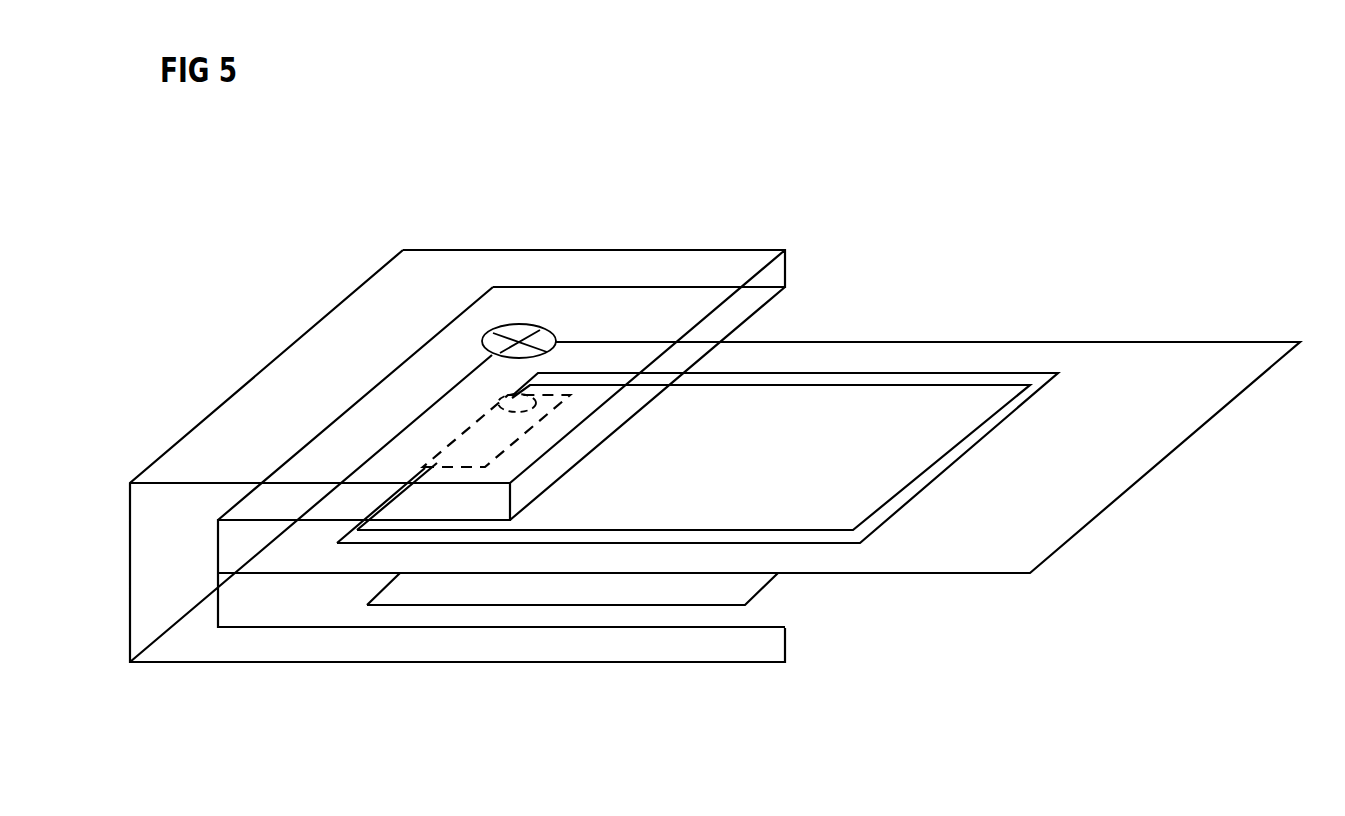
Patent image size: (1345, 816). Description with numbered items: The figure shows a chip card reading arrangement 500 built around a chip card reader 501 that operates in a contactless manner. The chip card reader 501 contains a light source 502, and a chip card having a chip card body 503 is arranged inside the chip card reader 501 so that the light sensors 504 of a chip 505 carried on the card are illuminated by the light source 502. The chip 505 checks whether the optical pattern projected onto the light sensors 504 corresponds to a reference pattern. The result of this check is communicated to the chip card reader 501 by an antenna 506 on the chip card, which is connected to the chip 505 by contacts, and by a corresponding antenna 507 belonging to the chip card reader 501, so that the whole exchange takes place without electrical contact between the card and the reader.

The chip card reading arrangement 500 is at (1236, 120).
The chip card reader 501 is at (289, 348).
The light source 502 is at (544, 334).
The chip card body 503 is at (1148, 341).
The light sensors 504 is at (513, 402).
The chip 505 is at (545, 425).
The antenna 506 is at (1010, 414).
The antenna 507 is at (613, 606).